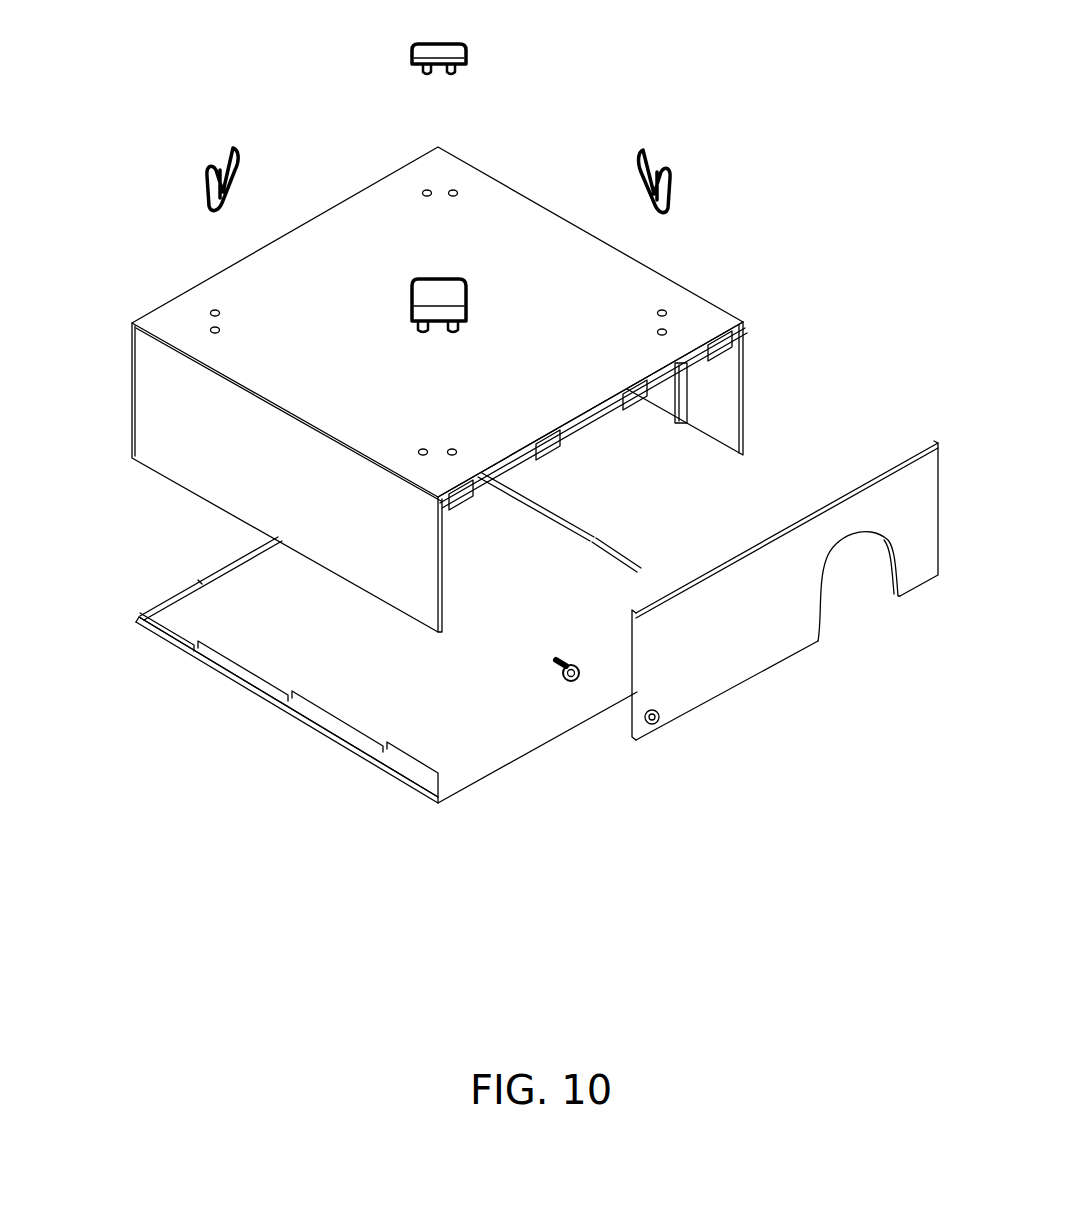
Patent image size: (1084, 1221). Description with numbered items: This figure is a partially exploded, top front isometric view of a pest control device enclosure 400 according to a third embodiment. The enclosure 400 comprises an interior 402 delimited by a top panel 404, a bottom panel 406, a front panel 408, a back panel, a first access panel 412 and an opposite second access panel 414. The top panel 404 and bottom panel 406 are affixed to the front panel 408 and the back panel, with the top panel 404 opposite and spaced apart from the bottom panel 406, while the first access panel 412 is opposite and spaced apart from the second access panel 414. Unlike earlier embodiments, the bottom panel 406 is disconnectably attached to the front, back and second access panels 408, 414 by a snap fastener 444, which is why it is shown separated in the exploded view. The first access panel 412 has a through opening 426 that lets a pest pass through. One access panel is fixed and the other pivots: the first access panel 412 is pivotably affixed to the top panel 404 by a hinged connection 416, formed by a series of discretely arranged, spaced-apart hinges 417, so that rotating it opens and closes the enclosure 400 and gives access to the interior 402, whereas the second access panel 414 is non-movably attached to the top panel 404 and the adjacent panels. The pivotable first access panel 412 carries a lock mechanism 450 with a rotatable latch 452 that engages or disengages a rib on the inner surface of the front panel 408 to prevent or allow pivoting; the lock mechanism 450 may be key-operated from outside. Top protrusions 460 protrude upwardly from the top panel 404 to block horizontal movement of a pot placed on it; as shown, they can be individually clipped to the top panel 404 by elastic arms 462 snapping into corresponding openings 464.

The pest control device enclosure 400 is at (272, 120).
The interior 402 is at (646, 432).
The top panel 404 is at (590, 286).
The bottom panel 406 is at (470, 750).
The front panel 408 is at (206, 452).
The first access panel 412 is at (760, 652).
The second access panel 414 is at (129, 378).
The hinged connection 416 is at (706, 380).
The hinges 417 is at (722, 346).
The through opening 426 is at (858, 574).
The snap fastener 444 is at (345, 720).
The lock mechanism 450 is at (581, 684).
The rotatable latch 452 is at (558, 661).
The top protrusion 460 is at (466, 40).
The arms 462 is at (455, 76).
The openings 464 is at (453, 188).